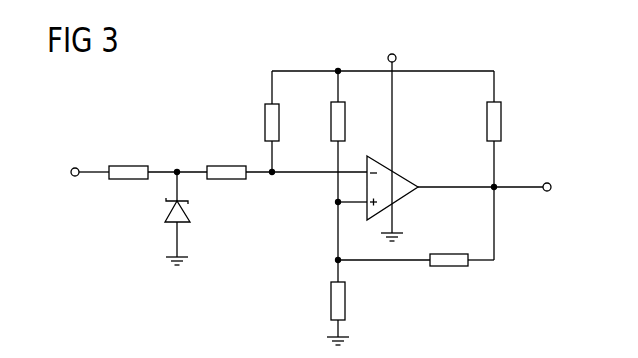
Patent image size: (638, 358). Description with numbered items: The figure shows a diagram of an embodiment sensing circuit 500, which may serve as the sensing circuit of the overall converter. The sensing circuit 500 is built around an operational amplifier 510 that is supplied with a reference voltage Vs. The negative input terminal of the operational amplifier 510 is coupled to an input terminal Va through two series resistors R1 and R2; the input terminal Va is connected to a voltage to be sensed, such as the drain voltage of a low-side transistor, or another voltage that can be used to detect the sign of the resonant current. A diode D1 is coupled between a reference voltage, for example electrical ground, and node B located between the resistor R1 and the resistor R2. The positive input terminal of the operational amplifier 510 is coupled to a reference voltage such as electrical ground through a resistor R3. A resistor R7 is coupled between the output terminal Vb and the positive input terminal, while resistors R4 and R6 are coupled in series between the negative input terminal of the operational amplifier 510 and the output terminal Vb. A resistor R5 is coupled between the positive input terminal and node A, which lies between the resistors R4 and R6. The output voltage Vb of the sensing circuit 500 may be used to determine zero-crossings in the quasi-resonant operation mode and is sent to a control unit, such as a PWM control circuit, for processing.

The sensing circuit 500 is at (312, 185).
The operational amplifier 510 is at (402, 175).
The resistor R1 is at (128, 160).
The resistor R2 is at (226, 160).
The resistor R3 is at (325, 313).
The resistor R4 is at (287, 121).
The resistor R5 is at (354, 106).
The resistor R6 is at (510, 106).
The resistor R7 is at (449, 247).
The diode D1 is at (164, 218).